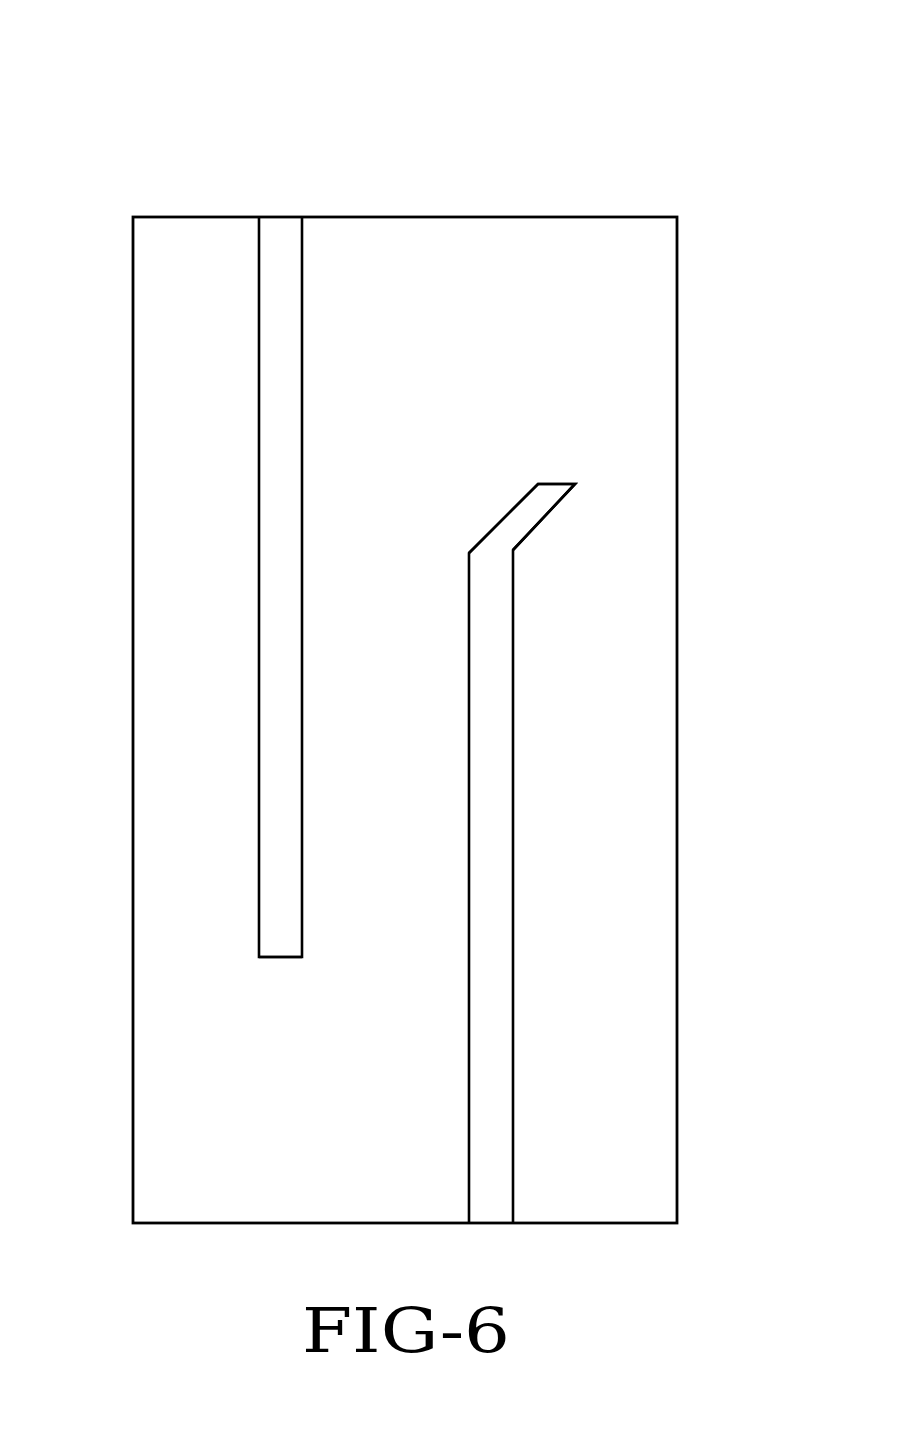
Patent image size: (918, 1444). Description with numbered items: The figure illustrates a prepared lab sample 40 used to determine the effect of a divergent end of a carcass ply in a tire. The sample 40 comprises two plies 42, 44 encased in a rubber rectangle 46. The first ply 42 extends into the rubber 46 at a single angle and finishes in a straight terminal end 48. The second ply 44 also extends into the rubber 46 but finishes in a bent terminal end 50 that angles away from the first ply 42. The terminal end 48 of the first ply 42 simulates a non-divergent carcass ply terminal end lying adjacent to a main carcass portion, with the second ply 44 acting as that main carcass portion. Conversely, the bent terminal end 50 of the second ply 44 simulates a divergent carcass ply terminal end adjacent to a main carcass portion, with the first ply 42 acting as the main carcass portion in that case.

The lab sample 40 is at (521, 170).
The first ply 42 is at (277, 553).
The second ply 44 is at (500, 997).
The rubber rectangle 46 is at (543, 380).
The terminal end 48 is at (283, 958).
The bent terminal end 50 is at (536, 507).